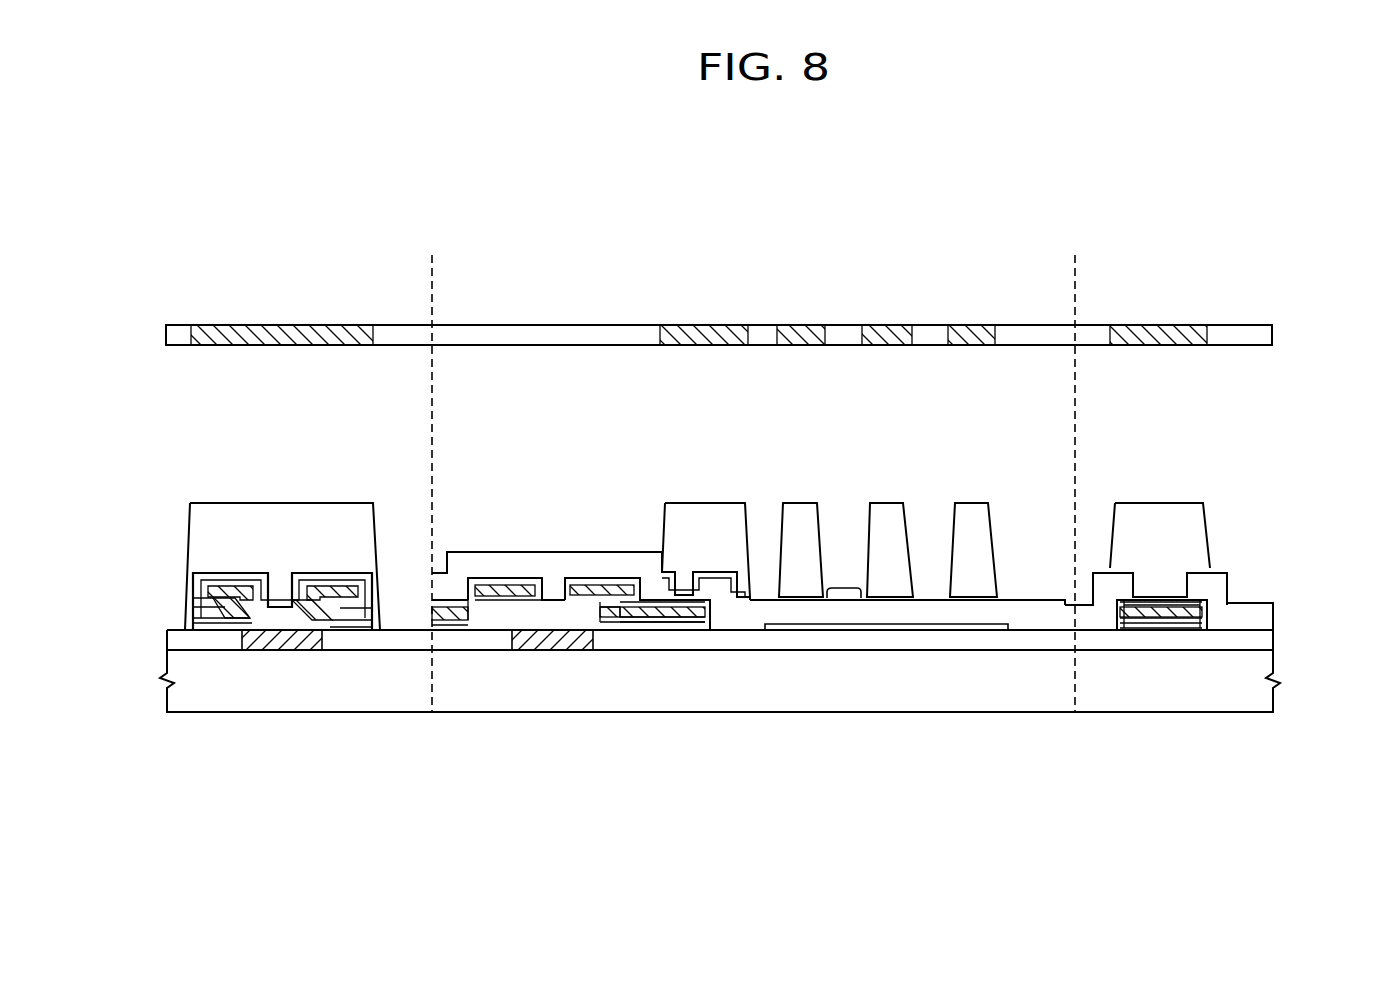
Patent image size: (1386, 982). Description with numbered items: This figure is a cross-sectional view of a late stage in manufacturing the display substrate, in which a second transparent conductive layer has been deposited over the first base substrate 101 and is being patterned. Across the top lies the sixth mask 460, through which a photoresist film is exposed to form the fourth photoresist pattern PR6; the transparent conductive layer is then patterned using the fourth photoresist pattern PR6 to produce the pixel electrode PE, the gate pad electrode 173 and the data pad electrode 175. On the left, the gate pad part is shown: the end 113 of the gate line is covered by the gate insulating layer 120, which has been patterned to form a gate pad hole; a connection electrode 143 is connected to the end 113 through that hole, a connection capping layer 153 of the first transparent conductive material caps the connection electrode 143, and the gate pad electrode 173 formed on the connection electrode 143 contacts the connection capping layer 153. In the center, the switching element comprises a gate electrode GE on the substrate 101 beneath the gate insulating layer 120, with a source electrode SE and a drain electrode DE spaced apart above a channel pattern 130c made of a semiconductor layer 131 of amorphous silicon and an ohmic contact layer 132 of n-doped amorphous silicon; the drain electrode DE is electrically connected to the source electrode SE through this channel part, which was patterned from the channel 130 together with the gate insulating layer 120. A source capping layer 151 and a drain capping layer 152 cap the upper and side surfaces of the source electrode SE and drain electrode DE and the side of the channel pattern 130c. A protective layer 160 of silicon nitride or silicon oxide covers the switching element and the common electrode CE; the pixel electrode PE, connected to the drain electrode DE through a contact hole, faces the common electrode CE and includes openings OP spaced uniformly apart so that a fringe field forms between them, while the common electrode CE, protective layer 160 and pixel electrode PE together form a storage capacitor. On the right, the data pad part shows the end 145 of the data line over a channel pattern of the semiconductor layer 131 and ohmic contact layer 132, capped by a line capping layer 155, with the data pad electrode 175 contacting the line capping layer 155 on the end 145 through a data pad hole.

The sixth mask 460 is at (1266, 334).
The data pad electrode 175 is at (1205, 582).
The protective layer 160 is at (1275, 612).
The gate insulating layer 120 is at (1275, 639).
The first base substrate 101 is at (1275, 668).
The connection capping layer 153 is at (193, 633).
The gate pad electrode 173 is at (235, 575).
The end of the gate line 113 is at (283, 623).
The connection electrode 143 is at (300, 640).
The source capping layer 151 is at (453, 605).
The source electrode SE is at (470, 613).
The gate electrode GE is at (542, 637).
The drain electrode DE is at (587, 588).
The drain capping layer 152 is at (608, 610).
The semiconductor layer 131 is at (641, 625).
The ohmic contact layer 132 is at (678, 622).
The channel pattern 130c is at (743, 792).
The channel 130 is at (803, 642).
The common electrode CE is at (893, 628).
The pixel electrode PE is at (977, 600).
The fourth photoresist pattern PR6 is at (972, 520).
The openings OP is at (845, 587).
The line capping layer 155 is at (1138, 604).
The end of the data line 145 is at (1150, 612).